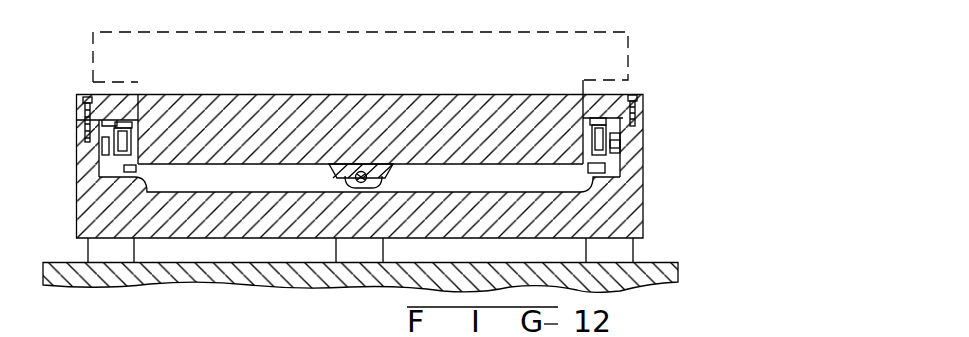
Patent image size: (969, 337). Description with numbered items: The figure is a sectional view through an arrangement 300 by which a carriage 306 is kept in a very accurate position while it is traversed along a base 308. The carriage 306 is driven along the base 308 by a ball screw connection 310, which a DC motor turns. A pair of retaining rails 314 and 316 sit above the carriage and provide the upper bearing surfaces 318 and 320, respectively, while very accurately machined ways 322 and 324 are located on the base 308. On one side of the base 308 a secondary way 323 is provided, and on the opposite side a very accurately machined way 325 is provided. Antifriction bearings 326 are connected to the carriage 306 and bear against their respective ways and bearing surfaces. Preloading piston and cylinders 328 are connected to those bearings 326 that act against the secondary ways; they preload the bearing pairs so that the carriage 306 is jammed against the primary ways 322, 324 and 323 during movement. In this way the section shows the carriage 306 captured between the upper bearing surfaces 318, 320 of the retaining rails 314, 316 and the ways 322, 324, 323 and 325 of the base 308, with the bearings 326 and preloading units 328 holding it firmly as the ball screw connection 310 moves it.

The cassette mounting assembly 300 is at (325, 332).
The carriage 306 is at (389, 96).
The base 308 is at (645, 200).
The ball screw connection 310 is at (377, 184).
The retaining rail 314 is at (97, 102).
The retaining rail 316 is at (622, 92).
The upper bearing surface 318 is at (113, 118).
The upper bearing surface 320 is at (632, 137).
The way 322 is at (77, 215).
The secondary way 323 is at (620, 135).
The way 324 is at (541, 238).
The way 325 is at (101, 149).
The antifriction bearing 326 is at (121, 121).
The preloading piston and cylinder 328 is at (134, 133).